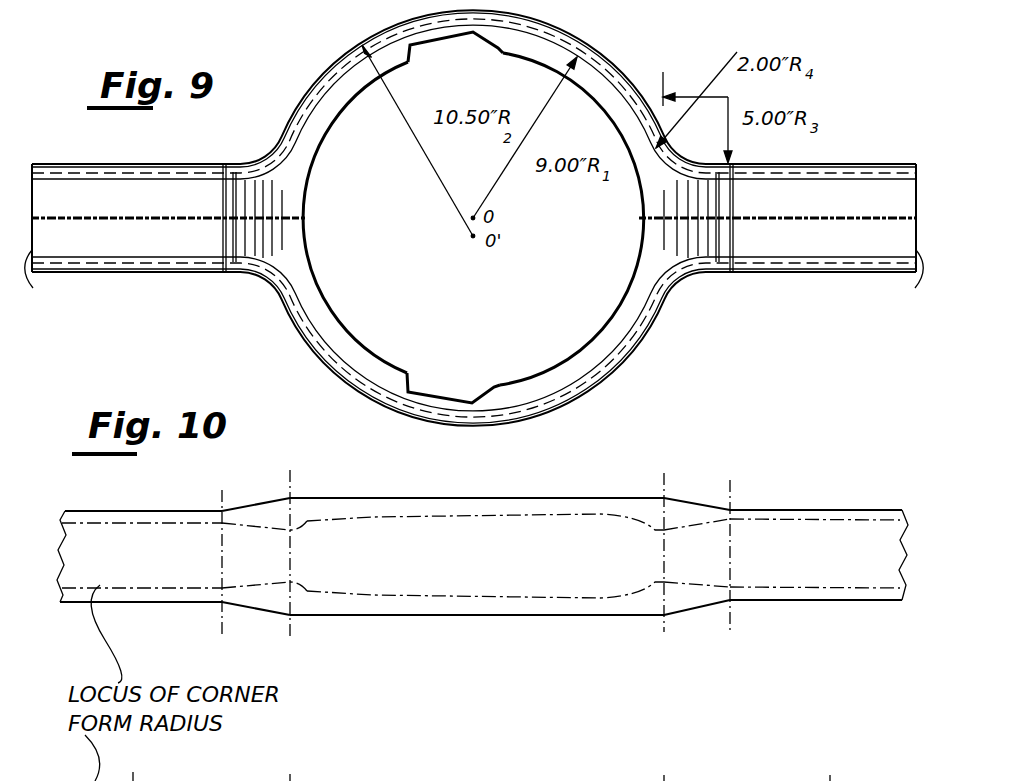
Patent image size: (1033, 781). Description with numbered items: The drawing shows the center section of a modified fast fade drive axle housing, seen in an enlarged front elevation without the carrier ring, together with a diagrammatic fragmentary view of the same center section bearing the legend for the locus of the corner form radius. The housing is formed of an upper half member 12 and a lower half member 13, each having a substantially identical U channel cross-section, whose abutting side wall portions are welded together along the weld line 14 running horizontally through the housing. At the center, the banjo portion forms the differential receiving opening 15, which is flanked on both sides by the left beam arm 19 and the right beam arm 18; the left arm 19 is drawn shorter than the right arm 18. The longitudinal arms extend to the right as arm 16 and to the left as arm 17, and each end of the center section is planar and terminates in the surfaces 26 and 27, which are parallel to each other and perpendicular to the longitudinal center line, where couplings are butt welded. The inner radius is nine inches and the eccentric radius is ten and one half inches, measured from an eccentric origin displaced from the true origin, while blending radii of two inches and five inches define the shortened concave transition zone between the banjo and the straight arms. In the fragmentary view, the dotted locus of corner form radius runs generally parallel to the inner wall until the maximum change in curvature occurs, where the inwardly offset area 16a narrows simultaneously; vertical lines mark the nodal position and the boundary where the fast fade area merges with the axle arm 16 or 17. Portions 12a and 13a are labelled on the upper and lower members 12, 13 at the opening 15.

In FIG. 9, the upper half member 12 is at (338, 60).
In FIG. 10, the upper half member 12 is at (568, 497).
In FIG. 9, the upper flange portion 12a is at (485, 44).
In FIG. 9, the lower half member 13 is at (360, 360).
In FIG. 9, the lower flange portion 13a is at (425, 390).
In FIG. 9, the weld line 14 is at (155, 218).
In FIG. 9, the differential receiving opening 15 is at (343, 115).
In FIG. 9, the right axle beam arm 16 is at (878, 162).
In FIG. 10, the inwardly offset area 16a is at (241, 606).
In FIG. 9, the left axle arm 17 is at (148, 162).
In FIG. 9, the right beam arm 18 is at (783, 163).
In FIG. 10, the right beam arm 18 is at (800, 510).
In FIG. 9, the left beam arm 19 is at (82, 163).
In FIG. 10, the left beam arm 19 is at (137, 511).
In FIG. 9, the end surface 26 is at (43, 278).
In FIG. 9, the end surface 27 is at (894, 279).